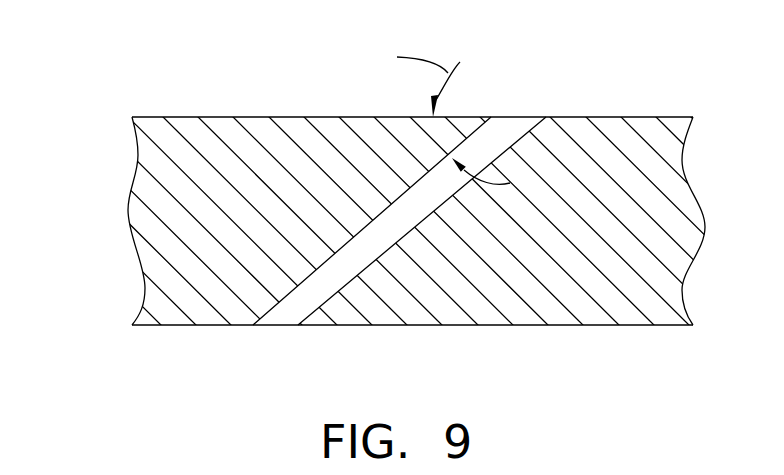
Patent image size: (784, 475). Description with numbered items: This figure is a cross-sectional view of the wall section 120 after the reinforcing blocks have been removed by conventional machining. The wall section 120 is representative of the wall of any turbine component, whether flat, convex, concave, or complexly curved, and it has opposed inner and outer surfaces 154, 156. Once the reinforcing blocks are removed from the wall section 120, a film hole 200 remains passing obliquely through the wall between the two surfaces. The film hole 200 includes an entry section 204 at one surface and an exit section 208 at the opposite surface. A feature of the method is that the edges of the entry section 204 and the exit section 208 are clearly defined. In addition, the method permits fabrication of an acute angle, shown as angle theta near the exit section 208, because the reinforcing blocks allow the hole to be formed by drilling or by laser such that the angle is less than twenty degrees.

The wall section 120 is at (128, 209).
The inner surface 154 is at (458, 326).
The outer surface 156 is at (318, 117).
The film hole 200 is at (392, 192).
The entry section 204 is at (275, 326).
The exit section 208 is at (518, 117).